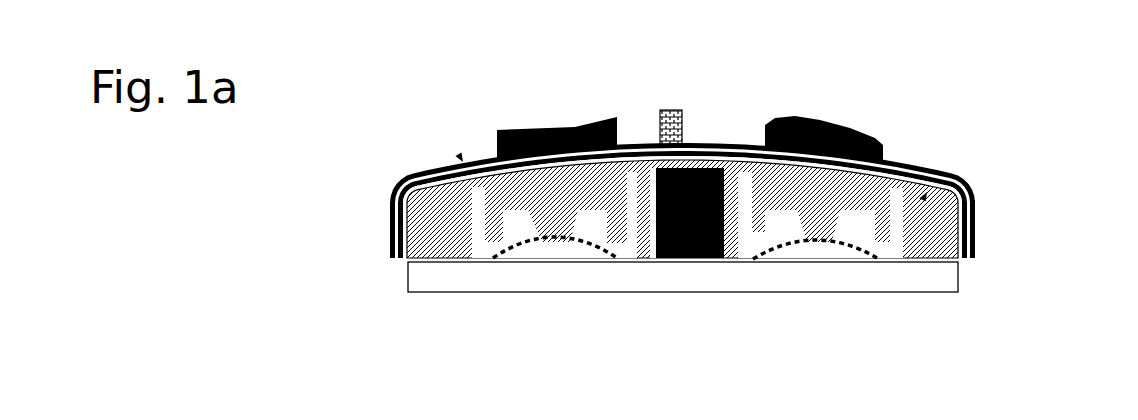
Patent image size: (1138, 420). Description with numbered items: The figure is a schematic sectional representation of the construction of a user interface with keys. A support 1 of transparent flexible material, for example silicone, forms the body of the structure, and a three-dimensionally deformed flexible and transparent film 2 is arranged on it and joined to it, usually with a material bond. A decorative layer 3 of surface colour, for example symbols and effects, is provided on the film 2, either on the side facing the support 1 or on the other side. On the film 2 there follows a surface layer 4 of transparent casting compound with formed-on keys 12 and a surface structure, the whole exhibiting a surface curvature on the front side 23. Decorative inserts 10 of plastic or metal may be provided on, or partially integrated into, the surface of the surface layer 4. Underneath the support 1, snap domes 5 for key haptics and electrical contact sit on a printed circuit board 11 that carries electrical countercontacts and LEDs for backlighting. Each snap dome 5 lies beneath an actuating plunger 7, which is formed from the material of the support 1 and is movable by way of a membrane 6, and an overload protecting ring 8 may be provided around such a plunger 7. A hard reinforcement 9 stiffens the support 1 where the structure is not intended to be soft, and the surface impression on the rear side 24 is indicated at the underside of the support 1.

The support 1 is at (433, 228).
The film 2 is at (415, 164).
The decorative layer 3 is at (750, 160).
The surface layer 4 is at (951, 172).
The snap dome 5 is at (850, 252).
The membrane 6 is at (627, 152).
The actuating plunger 7 is at (549, 221).
The overload protecting ring 8 is at (615, 221).
The hard reinforcement 9 is at (664, 258).
The decorative insert 10 is at (666, 110).
The printed circuit board 11 is at (936, 276).
The key 12 is at (855, 130).
The surface curvature on the front side 23 is at (462, 161).
The surface impression on the rear side 24 is at (926, 195).